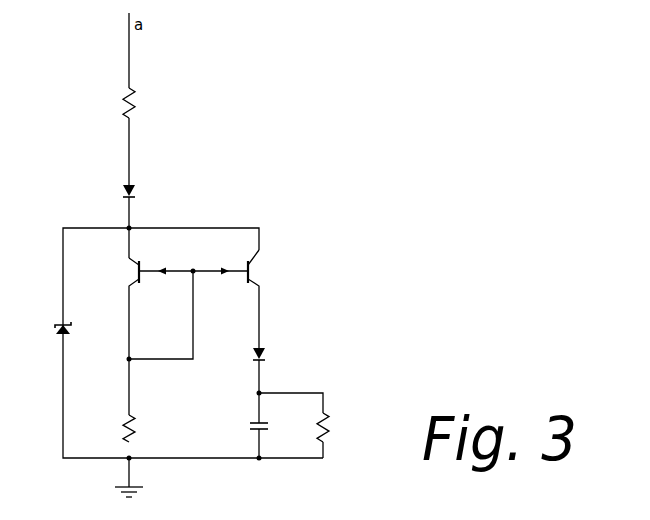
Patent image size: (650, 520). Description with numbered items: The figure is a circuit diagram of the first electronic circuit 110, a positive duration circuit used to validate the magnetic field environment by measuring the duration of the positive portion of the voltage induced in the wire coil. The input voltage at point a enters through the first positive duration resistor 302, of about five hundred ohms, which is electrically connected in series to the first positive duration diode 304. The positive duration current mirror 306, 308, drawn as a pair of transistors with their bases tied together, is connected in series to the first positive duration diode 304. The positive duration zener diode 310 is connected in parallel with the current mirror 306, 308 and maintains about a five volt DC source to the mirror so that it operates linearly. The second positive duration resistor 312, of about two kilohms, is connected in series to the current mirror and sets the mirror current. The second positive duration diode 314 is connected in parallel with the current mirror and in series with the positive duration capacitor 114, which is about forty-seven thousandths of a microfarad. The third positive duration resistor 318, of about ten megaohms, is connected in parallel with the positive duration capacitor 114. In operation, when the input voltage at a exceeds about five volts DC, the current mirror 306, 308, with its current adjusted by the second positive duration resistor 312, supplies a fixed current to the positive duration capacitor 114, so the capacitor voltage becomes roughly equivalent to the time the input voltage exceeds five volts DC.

The first electronic circuit 110 is at (366, 247).
The first positive duration resistor 302 is at (159, 102).
The first positive duration diode 304 is at (147, 192).
The positive duration current mirror transistor 306 is at (270, 272).
The positive duration current mirror transistor 308 is at (115, 272).
The positive duration zener diode 310 is at (81, 332).
The second positive duration resistor 312 is at (106, 425).
The second positive duration diode 314 is at (277, 358).
The positive duration capacitor 114 is at (232, 431).
The third positive duration resistor 318 is at (363, 425).